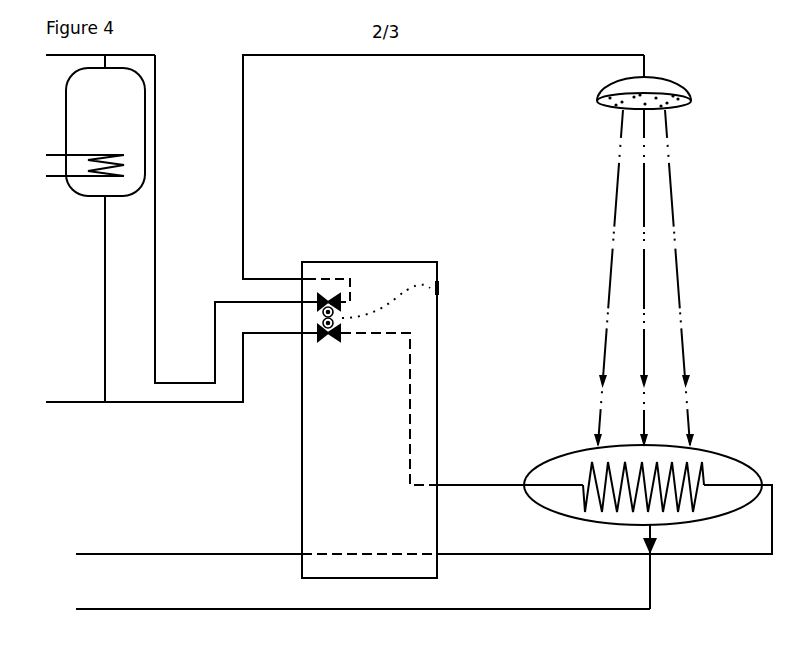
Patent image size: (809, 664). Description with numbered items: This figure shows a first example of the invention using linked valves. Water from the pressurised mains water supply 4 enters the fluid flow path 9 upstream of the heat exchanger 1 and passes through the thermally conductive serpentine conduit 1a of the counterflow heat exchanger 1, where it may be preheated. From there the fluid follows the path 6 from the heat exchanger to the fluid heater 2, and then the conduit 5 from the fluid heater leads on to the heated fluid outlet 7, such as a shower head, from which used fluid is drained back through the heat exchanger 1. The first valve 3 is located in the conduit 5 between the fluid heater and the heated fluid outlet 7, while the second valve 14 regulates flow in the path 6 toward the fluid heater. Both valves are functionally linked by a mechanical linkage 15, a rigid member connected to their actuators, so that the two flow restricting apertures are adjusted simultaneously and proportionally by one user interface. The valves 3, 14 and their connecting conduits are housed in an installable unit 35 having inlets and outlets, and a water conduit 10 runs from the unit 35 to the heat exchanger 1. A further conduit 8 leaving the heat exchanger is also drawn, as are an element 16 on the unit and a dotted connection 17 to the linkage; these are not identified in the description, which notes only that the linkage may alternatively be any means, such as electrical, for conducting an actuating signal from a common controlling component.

The heat exchanger 1 is at (734, 450).
The thermally conductive serpentine conduit 1a is at (704, 465).
The fluid heater 2 is at (73, 195).
The first valve 3 is at (330, 295).
The mains water supply 4 is at (142, 552).
The conduit from the fluid heater 5 is at (158, 276).
The path from the heat exchanger to the fluid heater 6 is at (151, 404).
The heated fluid outlet 7 is at (248, 218).
The line 8 is at (654, 582).
The fluid flow path upstream of the heat exchanger 9 is at (702, 557).
The water conduit 10 is at (491, 483).
The second valve 14 is at (329, 341).
The mechanical linkage 15 is at (341, 319).
The control unit 16 is at (442, 288).
The control line 17 is at (414, 297).
The installable unit 35 is at (413, 261).